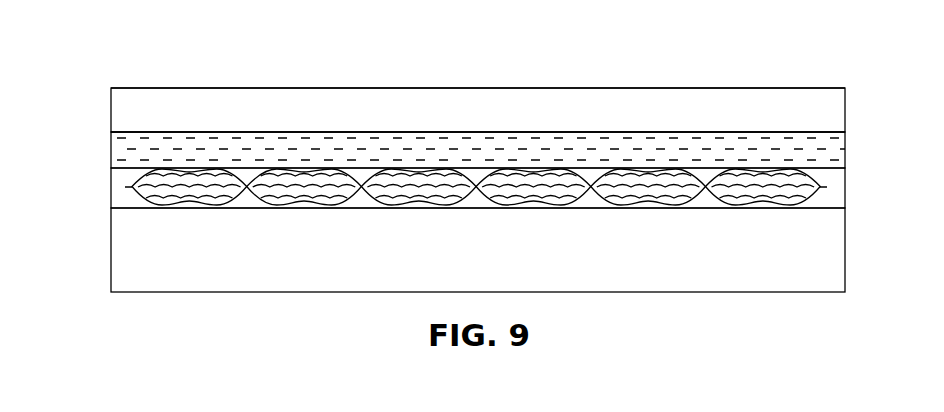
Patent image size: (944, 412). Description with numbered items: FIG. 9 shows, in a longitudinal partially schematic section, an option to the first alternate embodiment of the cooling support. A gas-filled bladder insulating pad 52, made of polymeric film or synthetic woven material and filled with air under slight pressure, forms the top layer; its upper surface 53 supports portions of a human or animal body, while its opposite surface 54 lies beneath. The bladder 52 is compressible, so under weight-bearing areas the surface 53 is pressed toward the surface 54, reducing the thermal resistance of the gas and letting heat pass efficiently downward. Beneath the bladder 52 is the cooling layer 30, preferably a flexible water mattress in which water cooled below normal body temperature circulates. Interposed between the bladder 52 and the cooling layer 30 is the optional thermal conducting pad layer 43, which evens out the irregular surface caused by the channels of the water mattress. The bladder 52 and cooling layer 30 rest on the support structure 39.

The gas-filled bladder insulating pad 52 is at (851, 88).
The thermal conducting pad layer 43 is at (851, 132).
The cooling layer 30 is at (851, 168).
The support structure 39 is at (851, 208).
The surface of the bladder 53 is at (133, 87).
The surface of the bladder 54 is at (126, 132).